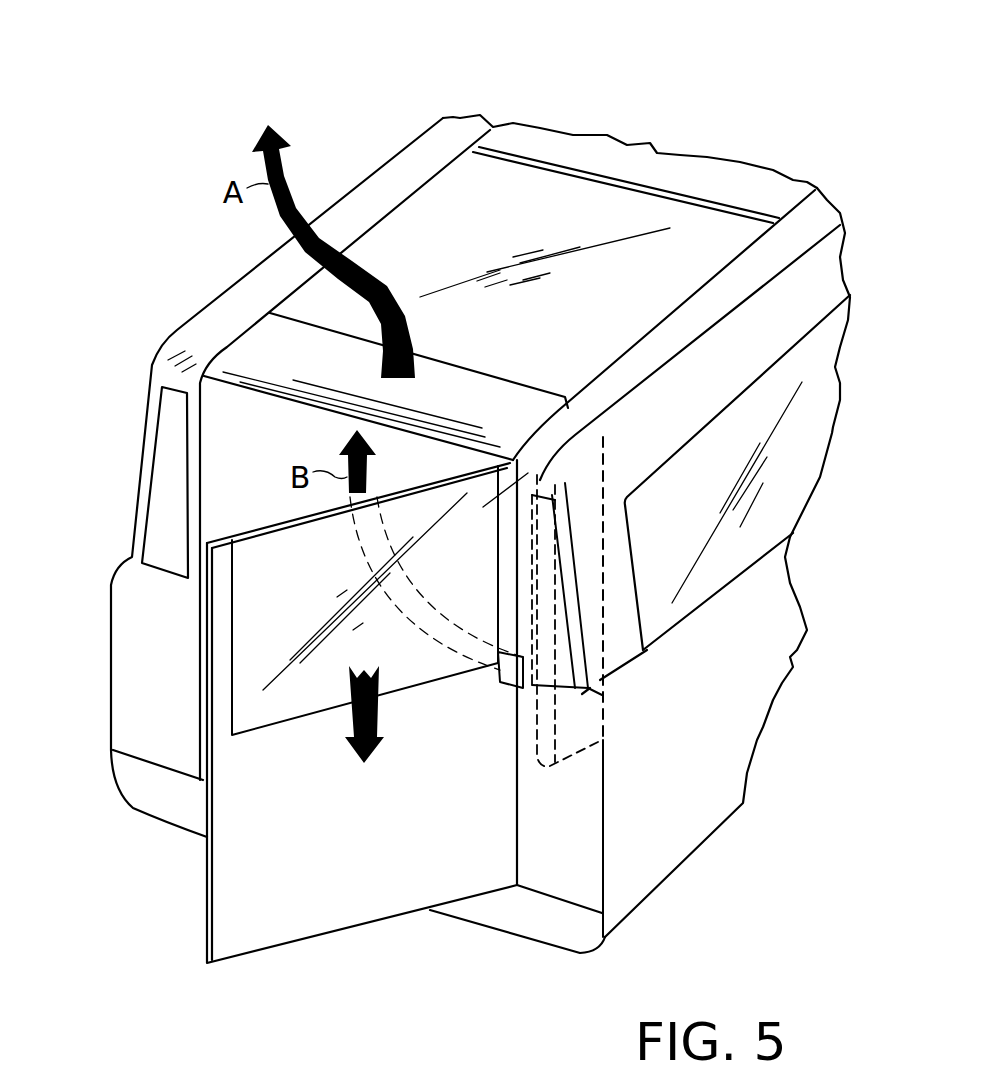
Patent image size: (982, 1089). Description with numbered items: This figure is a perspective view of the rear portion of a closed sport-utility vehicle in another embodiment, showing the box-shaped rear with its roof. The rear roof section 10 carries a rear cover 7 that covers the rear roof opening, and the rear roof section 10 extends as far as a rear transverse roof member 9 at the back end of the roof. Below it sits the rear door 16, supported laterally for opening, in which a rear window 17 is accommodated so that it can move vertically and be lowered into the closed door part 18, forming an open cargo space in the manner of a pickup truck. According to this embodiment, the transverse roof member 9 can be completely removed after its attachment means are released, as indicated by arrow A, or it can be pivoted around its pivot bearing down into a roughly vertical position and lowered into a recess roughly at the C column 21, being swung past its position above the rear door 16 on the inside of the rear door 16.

The rear cover 7 is at (473, 222).
The rear transverse roof member 9 is at (257, 353).
The rear roof section 10 is at (222, 274).
The rear door 16 is at (380, 880).
The rear window 17 is at (258, 630).
The closed door part 18 is at (243, 870).
The C column 21 is at (597, 790).